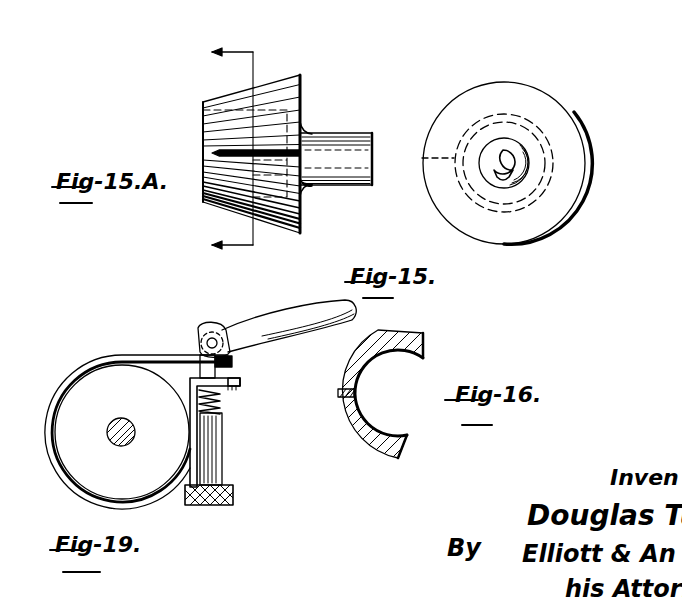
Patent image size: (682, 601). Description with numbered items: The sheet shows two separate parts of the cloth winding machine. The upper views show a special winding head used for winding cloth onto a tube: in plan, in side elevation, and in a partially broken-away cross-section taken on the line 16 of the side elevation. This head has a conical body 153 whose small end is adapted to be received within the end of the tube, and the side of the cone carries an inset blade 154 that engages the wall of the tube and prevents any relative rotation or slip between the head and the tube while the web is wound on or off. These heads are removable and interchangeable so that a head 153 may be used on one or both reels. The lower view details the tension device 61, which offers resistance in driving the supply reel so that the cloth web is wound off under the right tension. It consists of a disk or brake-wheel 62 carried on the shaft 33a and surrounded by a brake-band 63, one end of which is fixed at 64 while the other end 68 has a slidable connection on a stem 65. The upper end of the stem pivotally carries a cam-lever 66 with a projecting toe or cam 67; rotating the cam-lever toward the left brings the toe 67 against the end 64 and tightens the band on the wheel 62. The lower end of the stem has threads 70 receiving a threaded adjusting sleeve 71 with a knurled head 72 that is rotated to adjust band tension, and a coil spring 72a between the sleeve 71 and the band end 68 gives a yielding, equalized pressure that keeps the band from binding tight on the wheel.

In FIG. 15A, the conical body 153 is at (268, 98).
In FIG. 15, the conical body 153 is at (512, 82).
In FIG. 16, the conical body 153 is at (425, 336).
In FIG. 15A, the inset blade 154 is at (262, 150).
In FIG. 15, the inset blade 154 is at (422, 158).
In FIG. 16, the inset blade 154 is at (341, 397).
In FIG. 15A, the section line 16- 16 is at (215, 150).
In FIG. 19, the tension device 61 is at (117, 392).
In FIG. 19, the disk or brake-wheel 62 is at (122, 432).
In FIG. 19, the shaft 33a is at (127, 441).
In FIG. 19, the brake-band 63 is at (70, 477).
In FIG. 19, the fixed end of brake-band 64 is at (232, 362).
In FIG. 19, the stem 65 is at (232, 380).
In FIG. 19, the cam-lever 66 is at (305, 325).
In FIG. 19, the toe or cam 67 is at (204, 323).
In FIG. 19, the slidable end of brake-band 68 is at (203, 380).
In FIG. 19, the threads 70 is at (213, 433).
In FIG. 19, the threaded adjusting sleeve 71 is at (222, 468).
In FIG. 19, the knurled head 72 is at (221, 513).
In FIG. 19, the coil spring 72a is at (222, 402).